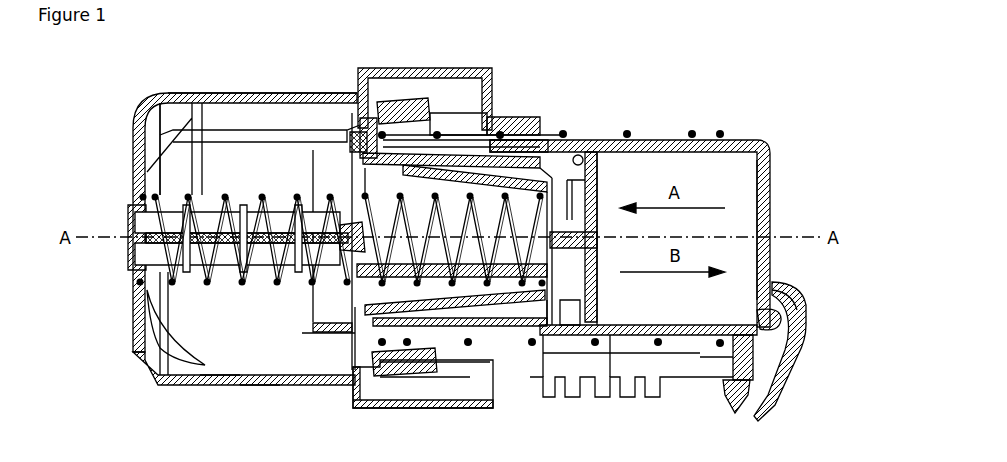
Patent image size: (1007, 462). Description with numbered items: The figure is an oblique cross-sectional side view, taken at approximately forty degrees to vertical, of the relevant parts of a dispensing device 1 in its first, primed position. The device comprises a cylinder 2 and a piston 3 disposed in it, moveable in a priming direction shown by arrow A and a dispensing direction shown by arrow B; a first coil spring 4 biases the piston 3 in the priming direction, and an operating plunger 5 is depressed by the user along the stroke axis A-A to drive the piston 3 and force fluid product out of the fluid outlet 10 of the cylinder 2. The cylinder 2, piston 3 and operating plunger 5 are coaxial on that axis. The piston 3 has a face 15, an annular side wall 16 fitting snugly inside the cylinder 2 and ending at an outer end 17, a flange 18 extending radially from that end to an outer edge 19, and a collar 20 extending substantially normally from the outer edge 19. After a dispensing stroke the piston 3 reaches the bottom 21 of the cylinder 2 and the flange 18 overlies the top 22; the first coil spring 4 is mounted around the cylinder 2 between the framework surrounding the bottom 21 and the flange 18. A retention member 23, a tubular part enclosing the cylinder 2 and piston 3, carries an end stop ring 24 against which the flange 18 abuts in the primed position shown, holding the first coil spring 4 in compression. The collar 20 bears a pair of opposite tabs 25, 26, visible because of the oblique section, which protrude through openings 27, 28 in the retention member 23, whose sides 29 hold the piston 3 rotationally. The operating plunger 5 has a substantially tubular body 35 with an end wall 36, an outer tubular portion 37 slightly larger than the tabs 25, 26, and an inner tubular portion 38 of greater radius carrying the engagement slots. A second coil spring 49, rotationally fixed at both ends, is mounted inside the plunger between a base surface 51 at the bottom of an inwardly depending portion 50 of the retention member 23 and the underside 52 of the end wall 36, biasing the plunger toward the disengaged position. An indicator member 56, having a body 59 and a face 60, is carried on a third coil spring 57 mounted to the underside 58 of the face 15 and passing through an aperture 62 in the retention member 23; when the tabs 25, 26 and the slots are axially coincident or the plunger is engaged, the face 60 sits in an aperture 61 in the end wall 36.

The dispensing device 1 is at (92, 112).
The cylinder 2 is at (655, 138).
The piston 3 is at (445, 115).
The first coil spring 4 is at (692, 132).
The operating plunger 5 is at (131, 145).
The fluid outlet 10 is at (788, 320).
The face 15 is at (598, 150).
The annular side wall 16 is at (478, 118).
The outer end 17 is at (275, 130).
The flange 18 is at (333, 125).
The outer edge 19 is at (350, 150).
The collar 20 is at (415, 118).
The bottom 21 is at (766, 196).
The top 22 is at (548, 143).
The retention member 23 is at (302, 335).
The end stop ring 24 is at (333, 340).
The tab 25 is at (392, 108).
The tab 26 is at (413, 372).
The opening 27 is at (508, 132).
The opening 28 is at (477, 365).
The sides 29 is at (447, 367).
The tubular body 35 is at (215, 386).
The end wall 36 is at (133, 320).
The outer tubular portion 37 is at (248, 386).
The inner tubular portion 38 is at (392, 405).
The second coil spring 49 is at (500, 290).
The inwardly depending portion 50 is at (537, 284).
The base surface 51 is at (570, 308).
The underside 52 is at (157, 378).
The indicator member 56 is at (190, 138).
The third coil spring 57 is at (215, 192).
The underside 58 is at (578, 152).
The body 59 is at (243, 215).
The face 60 is at (126, 225).
The aperture 61 is at (135, 207).
The aperture 62 is at (600, 338).